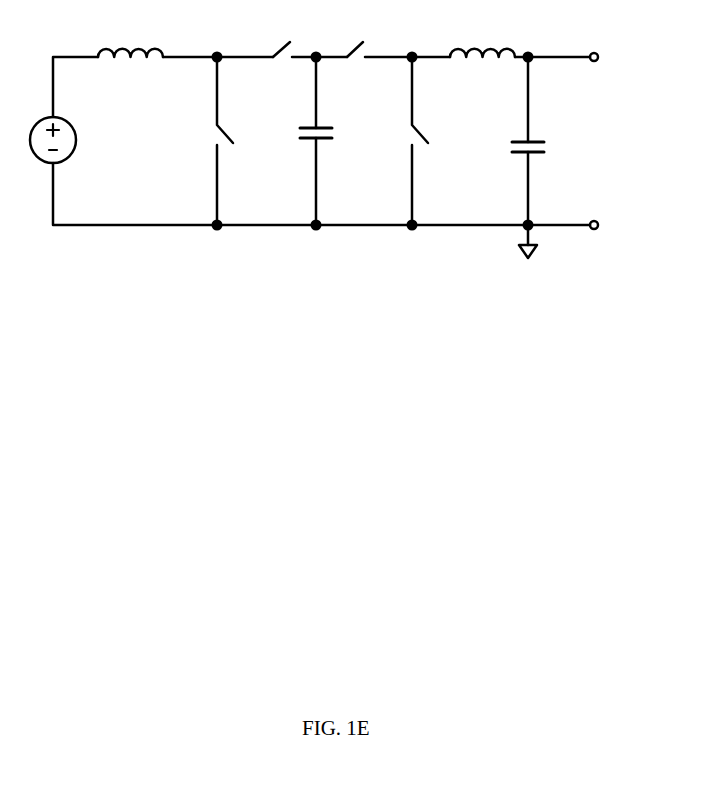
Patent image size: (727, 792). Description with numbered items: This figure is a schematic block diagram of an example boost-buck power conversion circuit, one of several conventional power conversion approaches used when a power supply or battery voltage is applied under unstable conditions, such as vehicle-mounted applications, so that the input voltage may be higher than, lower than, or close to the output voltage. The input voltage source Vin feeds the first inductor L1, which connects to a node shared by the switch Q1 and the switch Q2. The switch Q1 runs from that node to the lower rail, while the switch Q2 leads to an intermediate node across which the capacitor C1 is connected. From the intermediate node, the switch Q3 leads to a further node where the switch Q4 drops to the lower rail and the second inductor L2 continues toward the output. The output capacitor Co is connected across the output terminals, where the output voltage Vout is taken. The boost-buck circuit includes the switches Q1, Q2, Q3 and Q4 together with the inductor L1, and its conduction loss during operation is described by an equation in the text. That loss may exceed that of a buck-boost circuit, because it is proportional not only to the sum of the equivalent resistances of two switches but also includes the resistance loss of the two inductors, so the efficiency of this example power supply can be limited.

The input voltage source Vin is at (68, 140).
The inductor L1 is at (130, 38).
The switch Q1 is at (204, 141).
The switch Q2 is at (281, 34).
The switch Q3 is at (362, 34).
The switch Q4 is at (402, 141).
The first capacitor C1 is at (302, 141).
The second inductor L2 is at (482, 38).
The output capacitor Co is at (546, 141).
The output voltage terminals Vout is at (611, 141).